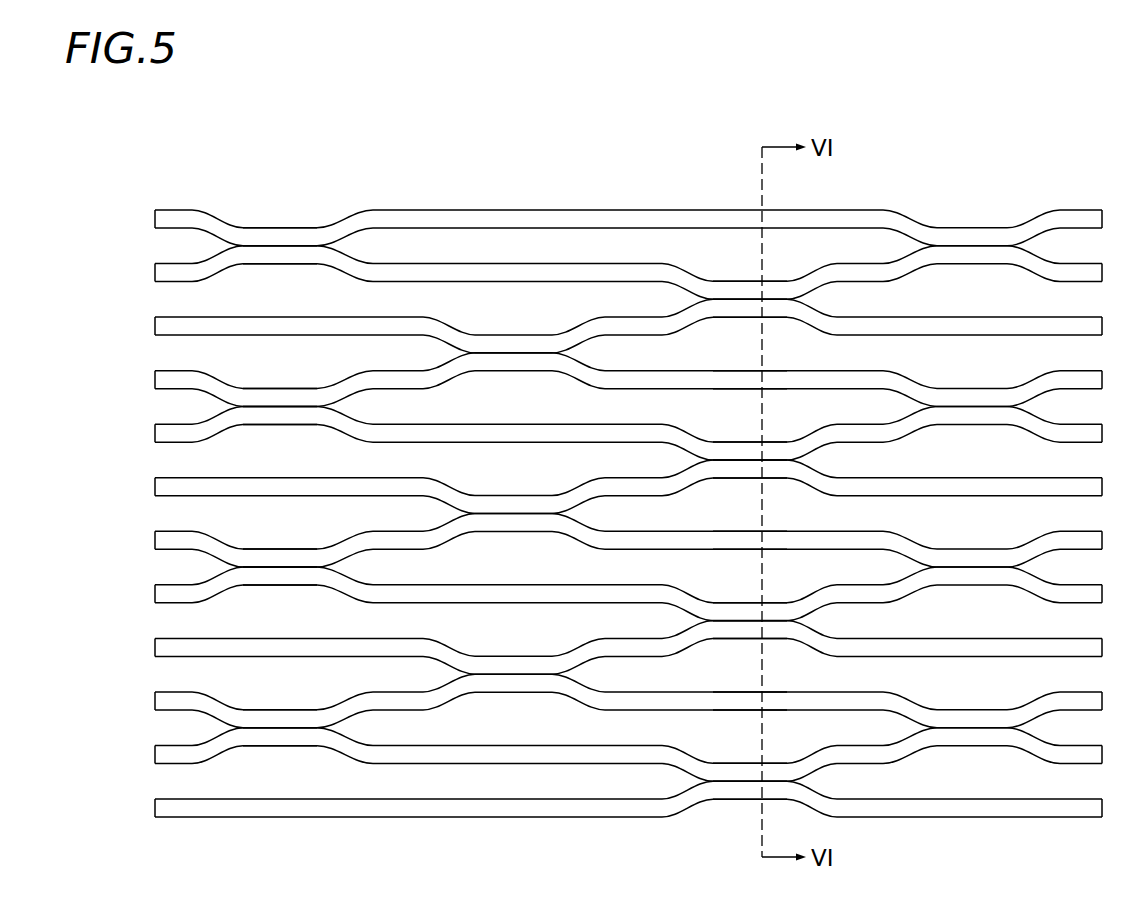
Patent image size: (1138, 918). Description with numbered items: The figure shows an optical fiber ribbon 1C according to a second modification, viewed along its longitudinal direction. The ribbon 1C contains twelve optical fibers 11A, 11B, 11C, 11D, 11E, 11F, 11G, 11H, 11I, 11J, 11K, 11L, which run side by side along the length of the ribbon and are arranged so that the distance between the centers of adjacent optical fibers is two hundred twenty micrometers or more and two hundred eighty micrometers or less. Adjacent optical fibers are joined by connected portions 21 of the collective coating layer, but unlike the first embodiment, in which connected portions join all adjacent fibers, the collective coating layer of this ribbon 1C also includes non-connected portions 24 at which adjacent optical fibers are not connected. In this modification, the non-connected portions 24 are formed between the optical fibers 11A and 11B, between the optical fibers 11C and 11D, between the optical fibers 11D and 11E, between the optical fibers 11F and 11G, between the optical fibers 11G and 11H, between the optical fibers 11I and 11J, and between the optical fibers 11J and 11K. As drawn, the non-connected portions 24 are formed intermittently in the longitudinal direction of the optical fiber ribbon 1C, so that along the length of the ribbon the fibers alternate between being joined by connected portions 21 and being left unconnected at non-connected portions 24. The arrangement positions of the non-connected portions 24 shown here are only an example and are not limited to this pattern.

The optical fiber ribbon 1C is at (455, 155).
The optical fiber 11A is at (155, 220).
The optical fiber 11B is at (155, 274).
The optical fiber 11C is at (155, 327).
The optical fiber 11D is at (155, 380).
The optical fiber 11E is at (155, 434).
The optical fiber 11F is at (155, 488).
The optical fiber 11G is at (155, 541).
The optical fiber 11H is at (155, 594).
The optical fiber 11I is at (155, 648).
The optical fiber 11J is at (155, 702).
The optical fiber 11K is at (155, 755).
The optical fiber 11L is at (155, 808).
The connected portion 21 is at (284, 246).
The non-connected portion 24 is at (740, 281).